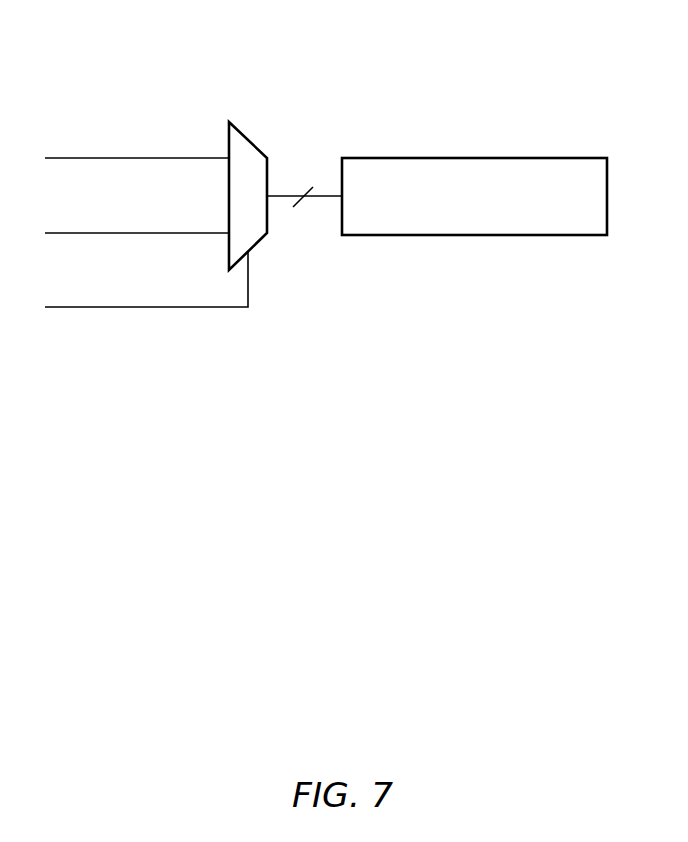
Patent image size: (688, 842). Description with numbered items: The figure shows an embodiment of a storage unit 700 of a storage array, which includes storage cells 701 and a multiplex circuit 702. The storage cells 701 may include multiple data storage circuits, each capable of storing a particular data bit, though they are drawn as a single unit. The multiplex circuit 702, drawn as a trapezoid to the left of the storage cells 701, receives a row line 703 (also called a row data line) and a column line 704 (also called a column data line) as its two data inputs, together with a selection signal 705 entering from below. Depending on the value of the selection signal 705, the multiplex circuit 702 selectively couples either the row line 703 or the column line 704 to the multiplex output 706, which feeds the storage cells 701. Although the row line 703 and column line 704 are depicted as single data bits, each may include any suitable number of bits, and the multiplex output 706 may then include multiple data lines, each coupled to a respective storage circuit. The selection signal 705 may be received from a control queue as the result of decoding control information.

The storage unit 700 is at (528, 82).
The storage cells 701 is at (454, 220).
The multiplex circuit 702 is at (245, 132).
The row line 703 is at (137, 159).
The column line 704 is at (137, 236).
The selection signal 705 is at (146, 295).
The multiplex output 706 is at (318, 198).